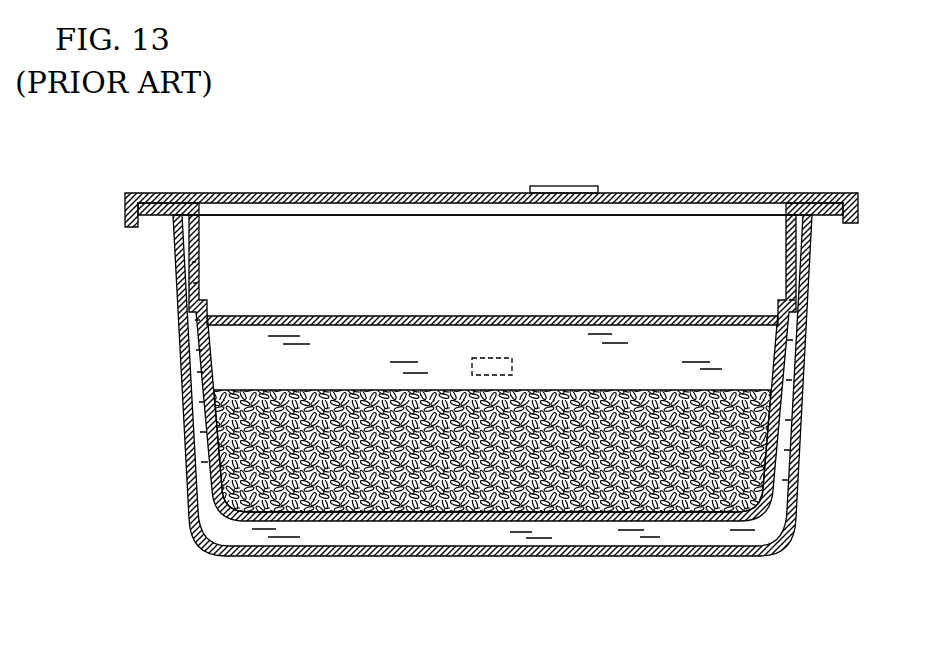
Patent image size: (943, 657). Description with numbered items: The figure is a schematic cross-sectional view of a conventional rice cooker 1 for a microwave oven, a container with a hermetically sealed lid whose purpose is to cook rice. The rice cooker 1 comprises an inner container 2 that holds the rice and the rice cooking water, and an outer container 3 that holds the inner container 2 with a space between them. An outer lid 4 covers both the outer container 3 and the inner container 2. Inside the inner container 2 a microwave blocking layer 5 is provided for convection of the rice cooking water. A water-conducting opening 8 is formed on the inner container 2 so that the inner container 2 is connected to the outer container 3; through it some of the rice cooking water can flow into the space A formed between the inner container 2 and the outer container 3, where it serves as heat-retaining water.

The rice cooker 1 is at (786, 148).
The inner container 2 is at (797, 497).
The outer container 3 is at (805, 432).
The outer lid 4 is at (698, 192).
The microwave blocking layer 5 is at (283, 316).
The water-conducting opening 8 is at (186, 382).
The space A is at (617, 532).